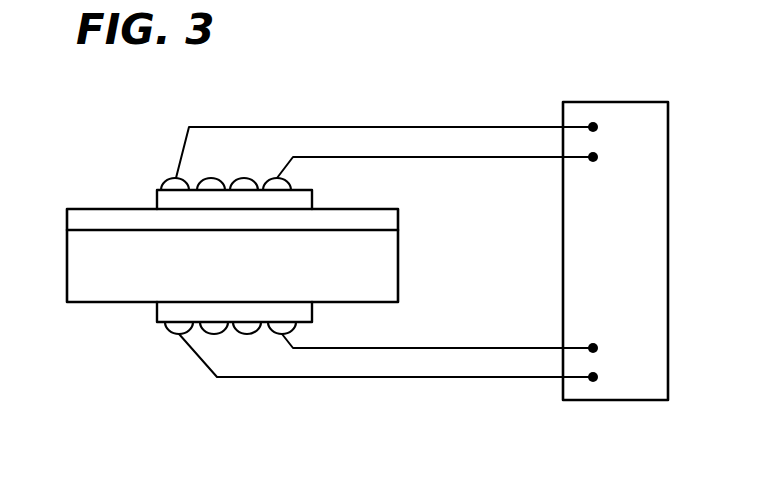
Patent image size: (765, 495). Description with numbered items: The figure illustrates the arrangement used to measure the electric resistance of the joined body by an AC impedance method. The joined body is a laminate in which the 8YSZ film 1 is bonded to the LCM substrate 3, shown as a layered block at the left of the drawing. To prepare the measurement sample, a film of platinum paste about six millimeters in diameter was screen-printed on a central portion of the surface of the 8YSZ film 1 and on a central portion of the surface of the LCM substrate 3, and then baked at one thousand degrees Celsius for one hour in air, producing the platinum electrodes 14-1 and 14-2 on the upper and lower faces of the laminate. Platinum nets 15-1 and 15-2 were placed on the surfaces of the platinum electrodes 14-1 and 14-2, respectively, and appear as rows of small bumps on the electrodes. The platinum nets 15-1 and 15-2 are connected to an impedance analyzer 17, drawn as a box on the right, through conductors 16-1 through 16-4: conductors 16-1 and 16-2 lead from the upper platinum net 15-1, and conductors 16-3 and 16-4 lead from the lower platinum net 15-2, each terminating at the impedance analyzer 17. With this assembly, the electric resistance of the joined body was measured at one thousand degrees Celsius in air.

The 8YSZ film 1 is at (72, 222).
The LCM substrate 3 is at (77, 276).
The platinum electrode 14-1 is at (306, 203).
The platinum electrode 14-2 is at (306, 310).
The platinum net 15-1 is at (247, 178).
The platinum net 15-2 is at (253, 334).
The conductor 16-1 is at (455, 127).
The conductor 16-2 is at (450, 158).
The conductor 16-3 is at (467, 348).
The conductor 16-4 is at (468, 378).
The impedance analyzer 17 is at (668, 245).